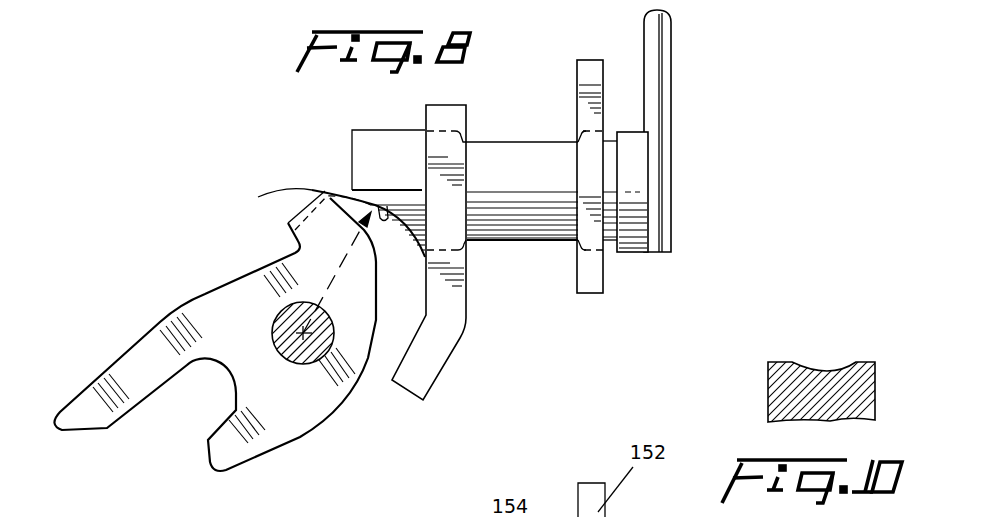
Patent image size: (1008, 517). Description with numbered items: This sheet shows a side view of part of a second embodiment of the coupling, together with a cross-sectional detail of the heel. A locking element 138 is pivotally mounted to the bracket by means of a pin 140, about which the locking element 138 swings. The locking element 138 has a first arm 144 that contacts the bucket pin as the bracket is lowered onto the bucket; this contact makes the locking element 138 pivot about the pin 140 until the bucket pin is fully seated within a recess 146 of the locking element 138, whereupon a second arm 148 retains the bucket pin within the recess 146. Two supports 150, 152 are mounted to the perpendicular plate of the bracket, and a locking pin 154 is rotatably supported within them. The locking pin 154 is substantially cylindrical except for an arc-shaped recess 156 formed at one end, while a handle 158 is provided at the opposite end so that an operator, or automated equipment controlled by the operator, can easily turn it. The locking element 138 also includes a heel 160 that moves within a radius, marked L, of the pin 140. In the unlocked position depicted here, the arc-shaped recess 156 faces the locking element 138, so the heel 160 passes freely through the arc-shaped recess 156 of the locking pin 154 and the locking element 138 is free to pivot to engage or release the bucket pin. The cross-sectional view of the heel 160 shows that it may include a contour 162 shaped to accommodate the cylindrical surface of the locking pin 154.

In FIG. 8, the locking element 138 is at (318, 400).
In FIG. 8, the pin 140 is at (303, 333).
In FIG. 8, the first arm 144 is at (138, 397).
In FIG. 8, the recess 146 is at (208, 363).
In FIG. 8, the second arm 148 is at (230, 455).
In FIG. 8, the support 150 is at (427, 380).
In FIG. 8, the support 152 is at (587, 273).
In FIG. 8, the locking pin 154 is at (500, 142).
In FIG. 8, the arc-shaped recess 156 is at (384, 206).
In FIG. 8, the handle 158 is at (672, 82).
In FIG. 8, the heel 160 is at (303, 212).
In FIG. 10, the heel 160 is at (877, 375).
In FIG. 10, the contour 162 is at (822, 372).